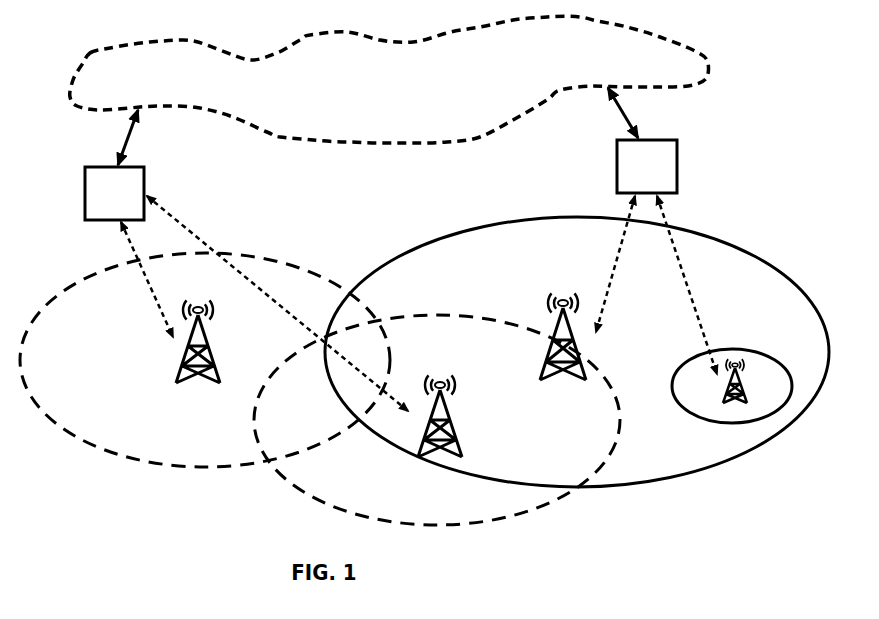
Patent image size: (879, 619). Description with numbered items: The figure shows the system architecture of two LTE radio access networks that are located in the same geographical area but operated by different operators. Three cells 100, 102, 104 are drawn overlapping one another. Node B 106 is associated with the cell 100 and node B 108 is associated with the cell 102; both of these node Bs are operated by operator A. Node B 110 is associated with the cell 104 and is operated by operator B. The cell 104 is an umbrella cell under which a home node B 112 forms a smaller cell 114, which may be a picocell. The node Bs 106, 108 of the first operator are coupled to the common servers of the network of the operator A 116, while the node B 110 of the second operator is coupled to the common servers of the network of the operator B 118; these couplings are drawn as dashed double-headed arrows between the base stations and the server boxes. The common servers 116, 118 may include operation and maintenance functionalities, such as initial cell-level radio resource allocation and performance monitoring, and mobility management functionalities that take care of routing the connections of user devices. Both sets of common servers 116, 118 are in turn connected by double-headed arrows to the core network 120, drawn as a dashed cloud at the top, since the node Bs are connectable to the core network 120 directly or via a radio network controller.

The cell 100 is at (113, 452).
The cell 102 is at (557, 501).
The cell 104 is at (400, 257).
The node B 106 is at (213, 362).
The node B 108 is at (457, 435).
The node B 110 is at (547, 370).
The home node B 112 is at (742, 379).
The small cell coverage area 114 is at (678, 408).
The common servers of the network of the operator A 116 is at (144, 181).
The common servers of the network of the operator B 118 is at (616, 165).
The core network 120 is at (80, 61).